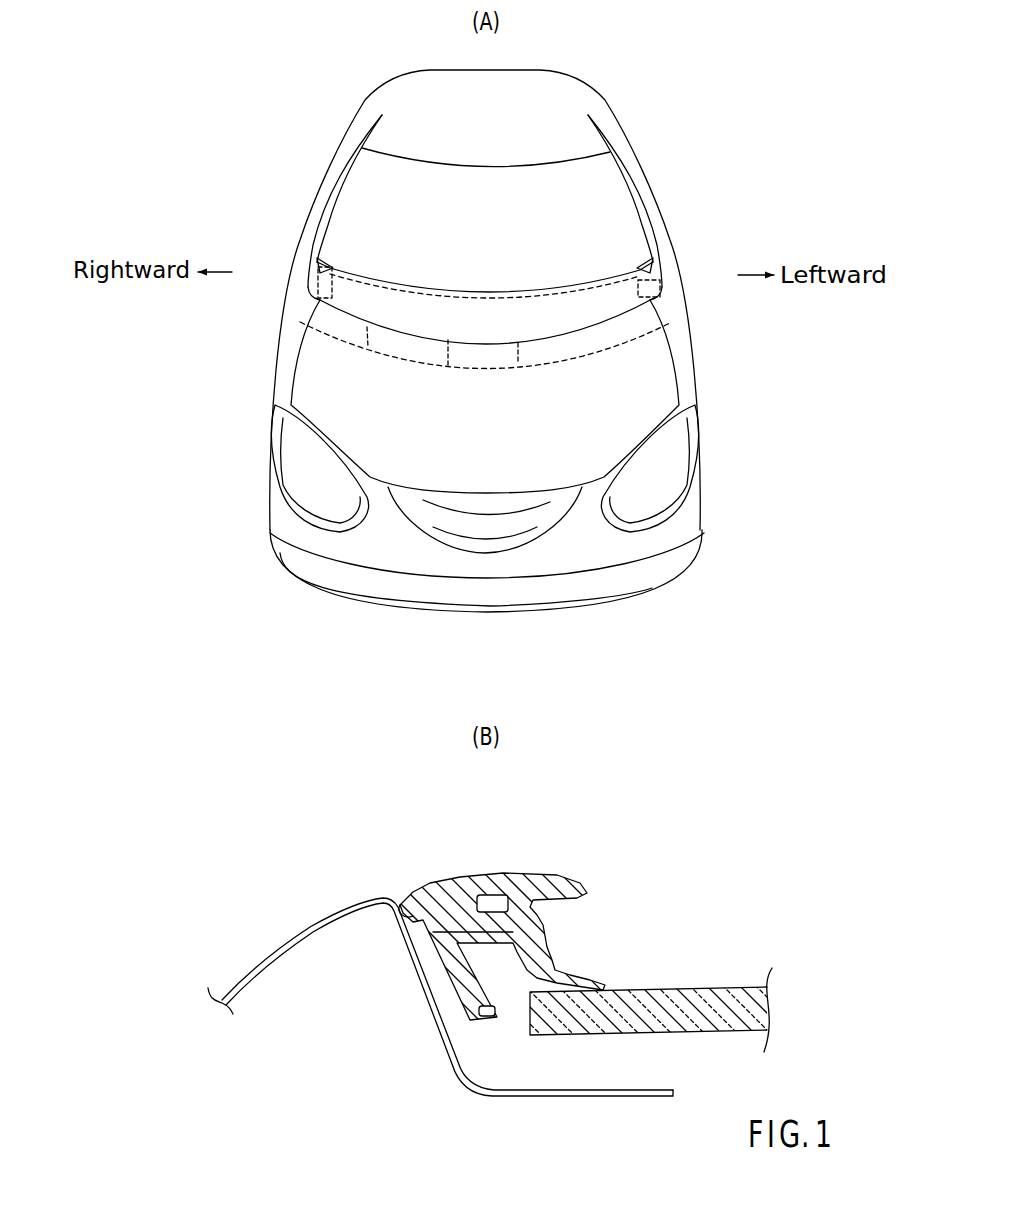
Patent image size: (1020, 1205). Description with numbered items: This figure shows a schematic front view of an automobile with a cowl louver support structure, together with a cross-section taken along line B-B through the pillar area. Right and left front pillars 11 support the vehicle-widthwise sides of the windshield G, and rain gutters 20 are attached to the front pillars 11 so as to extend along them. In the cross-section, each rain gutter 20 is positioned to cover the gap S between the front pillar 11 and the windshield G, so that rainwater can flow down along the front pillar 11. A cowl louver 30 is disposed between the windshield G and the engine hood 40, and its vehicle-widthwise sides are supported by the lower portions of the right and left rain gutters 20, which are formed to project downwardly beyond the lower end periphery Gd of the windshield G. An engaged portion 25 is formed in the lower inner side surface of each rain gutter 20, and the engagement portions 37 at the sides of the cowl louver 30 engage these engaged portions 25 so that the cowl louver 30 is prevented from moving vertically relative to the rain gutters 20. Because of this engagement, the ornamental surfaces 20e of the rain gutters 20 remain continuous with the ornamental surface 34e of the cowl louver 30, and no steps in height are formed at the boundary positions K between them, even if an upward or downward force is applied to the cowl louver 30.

The front pillar 11 is at (323, 190).
The rain gutter 20 is at (340, 152).
The ornamental surface of rain gutter 20e is at (309, 268).
The engaged portion 25 is at (330, 300).
The engagement portion 37 is at (486, 345).
The cowl louver 30 is at (603, 312).
The ornamental surface of cowl louver 34e is at (587, 312).
The engine hood 40 is at (547, 447).
The windshield G is at (520, 193).
The lower end periphery of windshield Gd is at (443, 295).
The boundary position K is at (326, 280).
The section line B- B is at (277, 188).
The gap S is at (502, 1048).